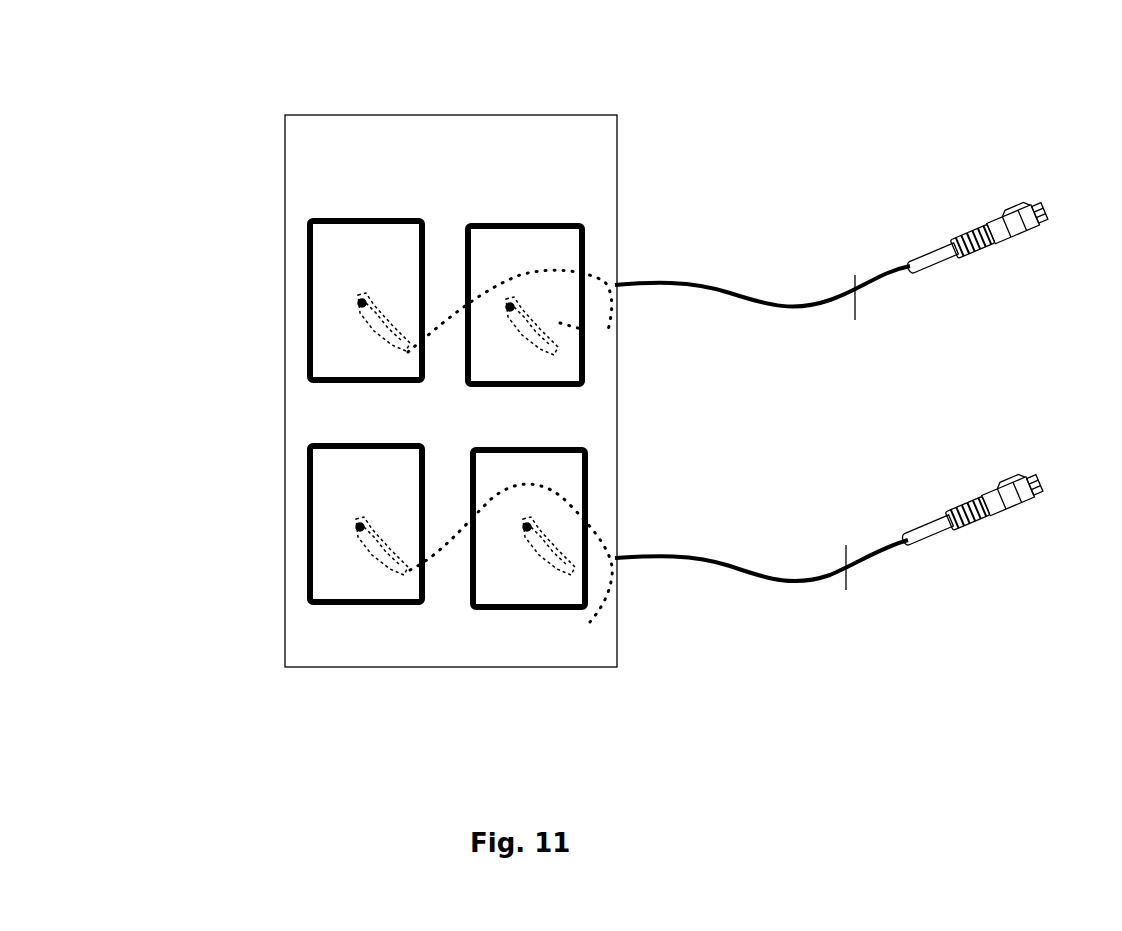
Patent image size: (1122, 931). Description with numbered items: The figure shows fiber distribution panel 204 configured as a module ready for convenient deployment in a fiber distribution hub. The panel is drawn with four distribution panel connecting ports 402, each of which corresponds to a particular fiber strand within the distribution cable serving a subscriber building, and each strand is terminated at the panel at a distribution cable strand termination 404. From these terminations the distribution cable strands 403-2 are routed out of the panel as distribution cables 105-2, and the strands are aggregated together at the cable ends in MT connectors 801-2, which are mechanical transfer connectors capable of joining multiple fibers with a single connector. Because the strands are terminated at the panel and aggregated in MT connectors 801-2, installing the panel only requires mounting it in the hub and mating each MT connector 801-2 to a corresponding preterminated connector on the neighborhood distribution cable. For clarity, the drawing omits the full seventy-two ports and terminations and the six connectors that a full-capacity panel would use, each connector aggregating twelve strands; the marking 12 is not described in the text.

The fiber distribution panel 204 is at (617, 113).
The distribution panel connecting port 402 is at (570, 610).
The distribution cable strand termination 404 is at (585, 225).
The distribution cable strand 403-2 is at (615, 562).
The distribution cable 105-2 is at (815, 580).
The section line 12 is at (862, 441).
The MT connector 801-2 is at (993, 258).